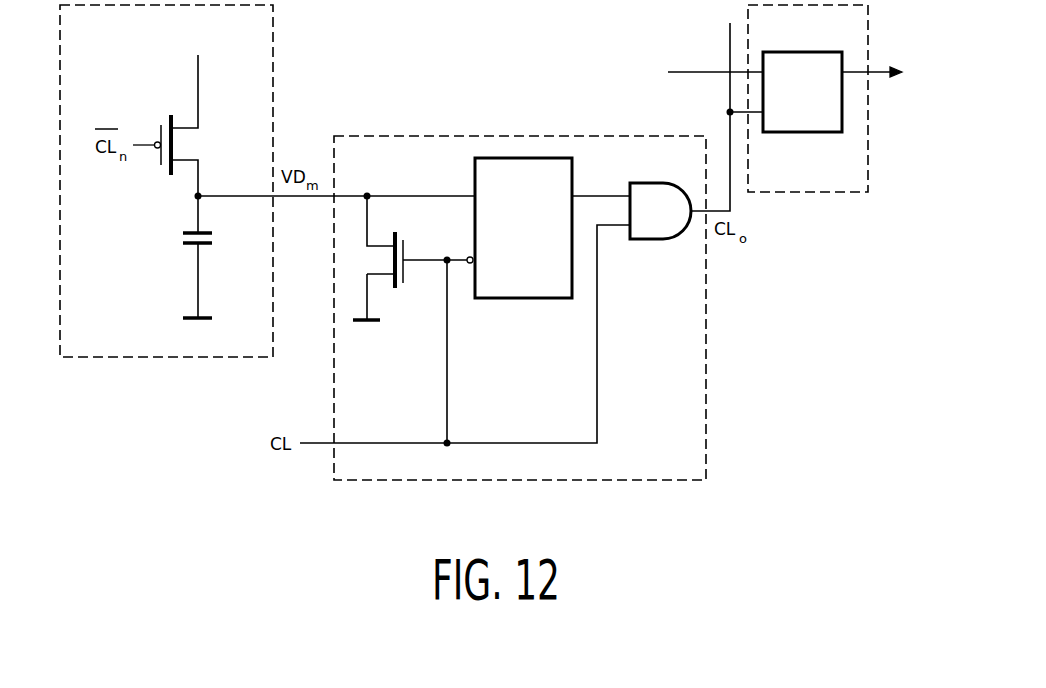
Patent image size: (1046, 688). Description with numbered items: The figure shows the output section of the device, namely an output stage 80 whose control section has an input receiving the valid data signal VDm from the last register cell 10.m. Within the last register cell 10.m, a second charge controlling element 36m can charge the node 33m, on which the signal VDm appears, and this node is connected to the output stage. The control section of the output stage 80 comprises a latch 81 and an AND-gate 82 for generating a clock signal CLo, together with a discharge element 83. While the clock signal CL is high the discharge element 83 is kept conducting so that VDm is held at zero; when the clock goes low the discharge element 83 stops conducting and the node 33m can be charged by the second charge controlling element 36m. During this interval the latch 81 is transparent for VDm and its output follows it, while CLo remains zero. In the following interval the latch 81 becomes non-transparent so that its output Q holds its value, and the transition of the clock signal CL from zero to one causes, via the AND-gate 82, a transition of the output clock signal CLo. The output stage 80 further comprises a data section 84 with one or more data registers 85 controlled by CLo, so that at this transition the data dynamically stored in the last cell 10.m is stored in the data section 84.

The last register cell 10.m is at (273, 54).
The second charge controlling element 36m is at (207, 144).
The node 33m is at (201, 195).
The output stage 80 is at (272, 533).
The latch 81 is at (523, 299).
The AND-gate 82 is at (654, 231).
The discharge element 83 is at (404, 289).
The data section 84 is at (818, 193).
The data register 85 is at (800, 133).